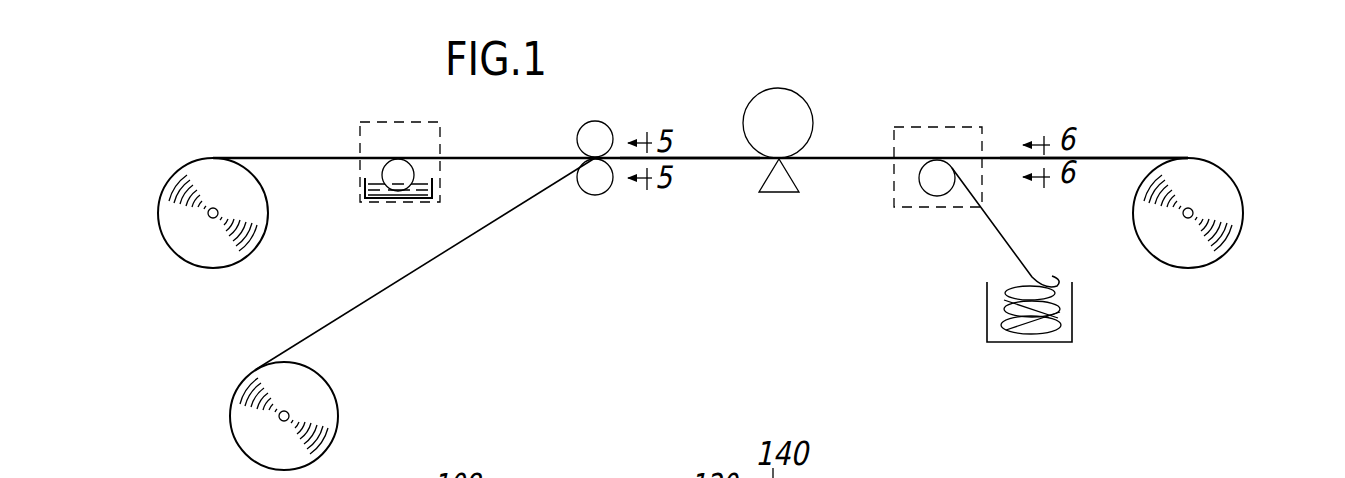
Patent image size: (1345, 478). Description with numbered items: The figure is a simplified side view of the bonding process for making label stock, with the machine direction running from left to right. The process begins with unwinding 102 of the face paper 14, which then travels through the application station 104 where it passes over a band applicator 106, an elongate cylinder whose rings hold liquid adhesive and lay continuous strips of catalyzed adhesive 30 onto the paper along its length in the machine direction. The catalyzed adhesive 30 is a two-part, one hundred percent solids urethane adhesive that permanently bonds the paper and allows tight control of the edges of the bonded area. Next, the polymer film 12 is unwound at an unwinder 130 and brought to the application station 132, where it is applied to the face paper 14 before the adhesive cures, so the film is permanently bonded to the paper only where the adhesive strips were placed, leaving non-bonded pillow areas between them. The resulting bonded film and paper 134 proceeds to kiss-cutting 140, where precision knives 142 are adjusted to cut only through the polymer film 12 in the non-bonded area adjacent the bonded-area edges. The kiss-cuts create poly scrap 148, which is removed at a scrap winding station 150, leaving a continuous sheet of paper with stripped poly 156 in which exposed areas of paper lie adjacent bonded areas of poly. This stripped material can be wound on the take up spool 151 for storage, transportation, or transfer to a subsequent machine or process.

The polymer film 12 is at (346, 312).
The face paper 14 is at (283, 158).
The catalyzed adhesive 30 is at (460, 180).
The unwinding 102 is at (172, 263).
The application station 104 is at (394, 139).
The band applicator 106 is at (375, 173).
The unwinder 130 is at (227, 388).
The application station 132 is at (606, 106).
The bonded film and paper 134 is at (705, 161).
The kiss-cutting 140 is at (785, 73).
The precision knives 142 is at (797, 181).
The poly scrap 148 is at (1003, 237).
The scrap winding station 150 is at (1058, 273).
The take up spool 151 is at (1236, 187).
The paper with stripped poly 156 is at (1126, 145).